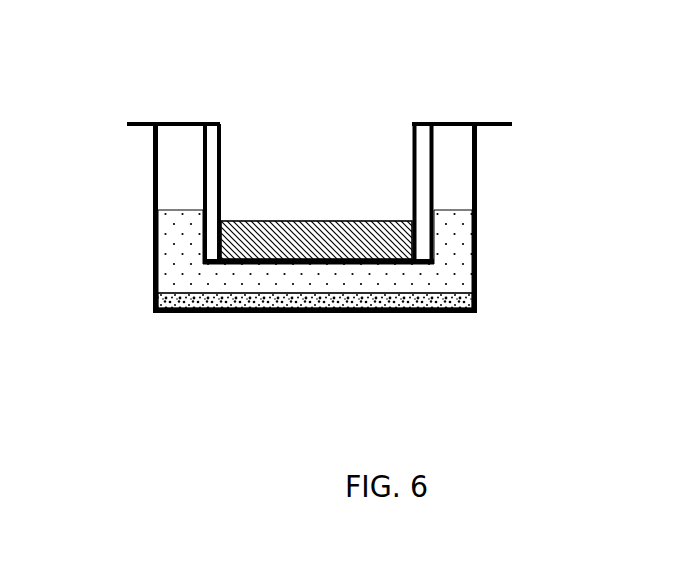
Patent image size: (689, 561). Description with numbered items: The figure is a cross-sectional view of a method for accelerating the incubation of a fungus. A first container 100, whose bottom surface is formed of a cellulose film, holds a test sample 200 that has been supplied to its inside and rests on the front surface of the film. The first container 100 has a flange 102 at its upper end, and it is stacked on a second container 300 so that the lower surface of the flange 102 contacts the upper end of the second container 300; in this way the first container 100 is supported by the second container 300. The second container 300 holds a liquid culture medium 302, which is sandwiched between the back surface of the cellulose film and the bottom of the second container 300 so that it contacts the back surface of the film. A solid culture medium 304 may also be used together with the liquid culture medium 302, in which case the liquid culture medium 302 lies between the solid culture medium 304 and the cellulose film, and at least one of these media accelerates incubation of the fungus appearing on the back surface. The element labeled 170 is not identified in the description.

The first container 100 is at (342, 204).
The flange 102 is at (498, 127).
The bottom membrane of tray 170 is at (380, 262).
The test sample 200 is at (247, 250).
The second container 300 is at (152, 253).
The liquid culture medium 302 is at (310, 283).
The solid culture medium 304 is at (442, 302).